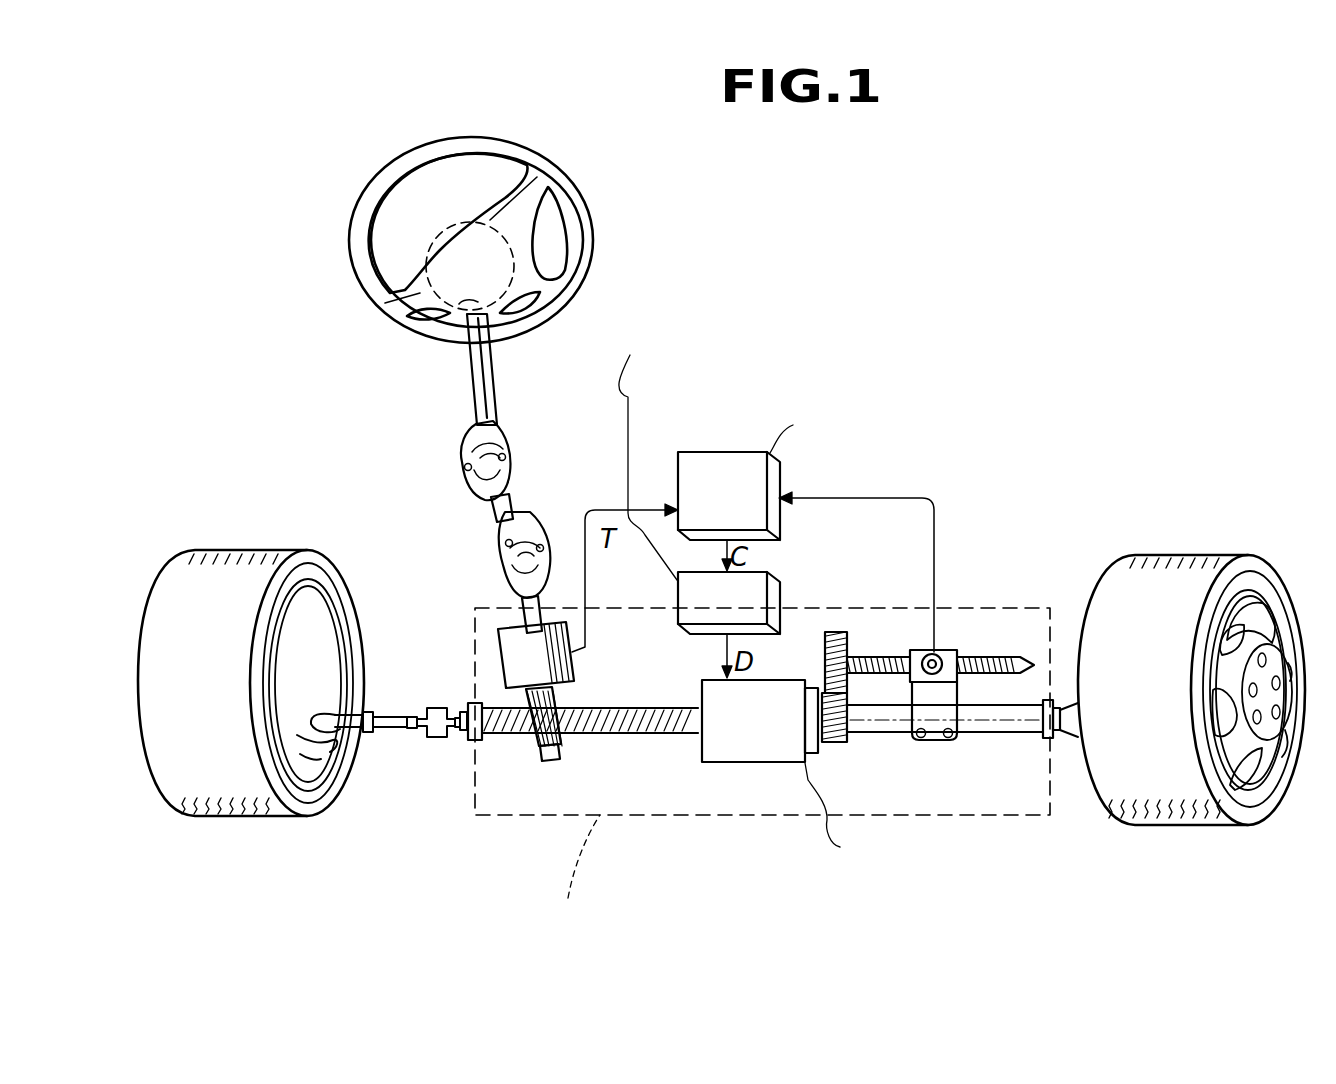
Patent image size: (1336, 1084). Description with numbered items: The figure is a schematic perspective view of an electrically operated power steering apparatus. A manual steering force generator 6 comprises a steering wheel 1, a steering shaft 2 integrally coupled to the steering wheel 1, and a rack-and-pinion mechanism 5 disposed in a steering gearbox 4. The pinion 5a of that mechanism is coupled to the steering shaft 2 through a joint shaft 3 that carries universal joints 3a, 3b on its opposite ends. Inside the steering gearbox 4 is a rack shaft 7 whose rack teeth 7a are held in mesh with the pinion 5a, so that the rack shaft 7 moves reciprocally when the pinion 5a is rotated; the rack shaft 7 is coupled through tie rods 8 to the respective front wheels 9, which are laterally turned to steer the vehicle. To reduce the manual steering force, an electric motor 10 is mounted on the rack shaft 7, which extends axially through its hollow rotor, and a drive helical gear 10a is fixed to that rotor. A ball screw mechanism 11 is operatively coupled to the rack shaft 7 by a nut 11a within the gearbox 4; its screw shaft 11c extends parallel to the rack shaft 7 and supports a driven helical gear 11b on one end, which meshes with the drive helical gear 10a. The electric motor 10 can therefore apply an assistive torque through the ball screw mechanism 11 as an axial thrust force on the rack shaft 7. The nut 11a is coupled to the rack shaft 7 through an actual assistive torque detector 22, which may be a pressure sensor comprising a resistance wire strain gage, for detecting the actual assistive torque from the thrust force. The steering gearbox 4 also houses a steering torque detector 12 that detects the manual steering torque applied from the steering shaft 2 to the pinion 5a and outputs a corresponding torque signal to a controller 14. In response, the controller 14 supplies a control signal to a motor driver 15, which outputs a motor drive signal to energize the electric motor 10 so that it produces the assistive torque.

The steering wheel 1 is at (557, 164).
The steering shaft 2 is at (489, 389).
The joint shaft 3 is at (504, 496).
The universal joint 3a is at (505, 452).
The universal joint 3b is at (530, 522).
The steering gearbox 4 is at (550, 815).
The rack-and-pinion mechanism 5 is at (511, 752).
The pinion 5a is at (528, 738).
The manual steering force generator 6 is at (443, 474).
The rack shaft 7 is at (764, 717).
The rack teeth 7a is at (615, 705).
The tie rods 8 is at (393, 715).
The front wheels 9 is at (213, 548).
The electric motor 10 is at (844, 785).
The drive helical gear 10a is at (837, 742).
The ball screw mechanism 11 is at (929, 595).
The nut 11a is at (952, 646).
The driven helical gear 11b is at (823, 657).
The screw shaft 11c is at (1026, 660).
The steering torque detector 12 is at (503, 630).
The controller 14 is at (745, 450).
The motor driver 15 is at (780, 578).
The actual assistive torque detector 22 is at (920, 650).